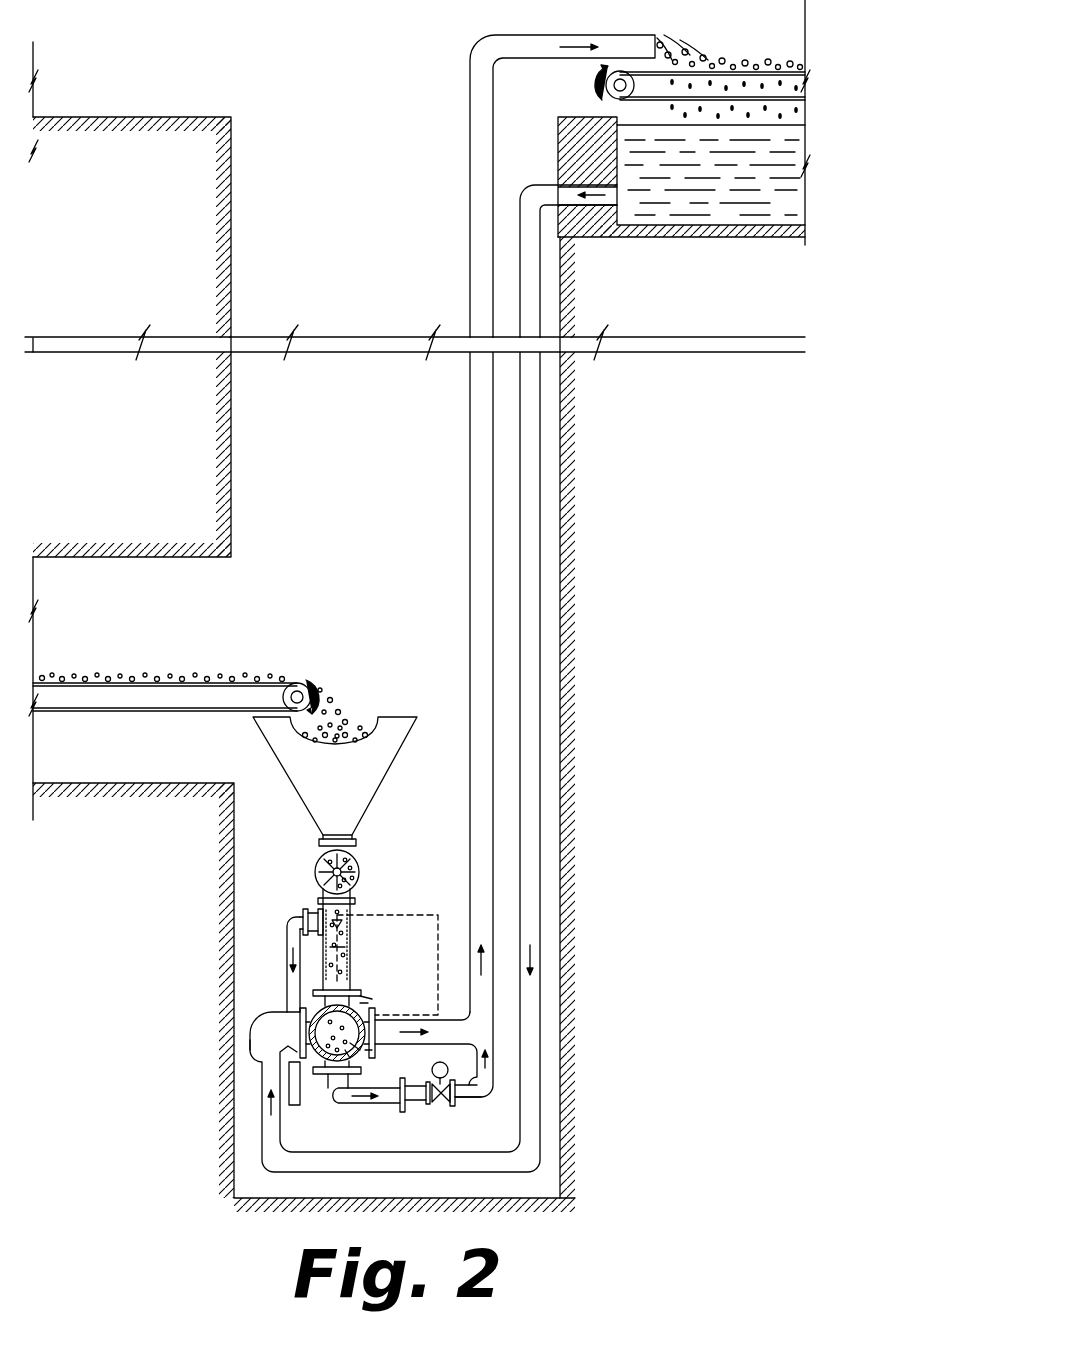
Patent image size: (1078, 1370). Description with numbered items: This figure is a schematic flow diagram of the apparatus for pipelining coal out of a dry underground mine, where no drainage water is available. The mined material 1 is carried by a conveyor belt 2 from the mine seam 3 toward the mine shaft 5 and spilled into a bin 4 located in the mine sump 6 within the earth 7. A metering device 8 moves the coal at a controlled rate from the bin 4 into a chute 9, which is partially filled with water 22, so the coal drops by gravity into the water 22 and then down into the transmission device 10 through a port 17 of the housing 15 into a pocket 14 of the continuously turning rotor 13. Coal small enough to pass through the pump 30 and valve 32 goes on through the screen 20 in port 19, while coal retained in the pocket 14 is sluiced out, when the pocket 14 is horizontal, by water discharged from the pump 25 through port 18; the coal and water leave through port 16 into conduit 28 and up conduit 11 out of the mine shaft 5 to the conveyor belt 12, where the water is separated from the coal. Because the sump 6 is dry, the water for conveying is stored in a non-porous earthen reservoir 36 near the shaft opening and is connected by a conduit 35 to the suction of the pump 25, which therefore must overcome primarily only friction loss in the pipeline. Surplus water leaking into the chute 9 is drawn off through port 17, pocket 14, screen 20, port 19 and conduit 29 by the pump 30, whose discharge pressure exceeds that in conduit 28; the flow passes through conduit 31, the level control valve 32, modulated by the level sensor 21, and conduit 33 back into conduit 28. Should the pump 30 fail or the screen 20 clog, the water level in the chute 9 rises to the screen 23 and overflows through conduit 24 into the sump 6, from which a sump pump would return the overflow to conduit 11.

The mined material 1 is at (240, 682).
The conveyor belt 2 is at (285, 688).
The mine seam 3 is at (114, 616).
The bin 4 is at (395, 766).
The mine shaft 5 is at (312, 436).
The mine sump 6 is at (280, 838).
The earth 7 is at (118, 432).
The metering device 8 is at (358, 866).
The chute 9 is at (352, 962).
The transmission device 10 is at (367, 1025).
The conduit 11 is at (470, 535).
The conveyor belt 12 is at (606, 90).
The rotor 13 is at (358, 1047).
The pocket 14 is at (347, 1057).
The housing 15 is at (368, 1003).
The port 16 is at (372, 1052).
The port 17 is at (372, 999).
The transmission device port 18 is at (300, 1005).
The transmission device port 19 is at (300, 1066).
The screen 20 is at (340, 1076).
The level sensor 21 is at (345, 931).
The water 22 is at (345, 947).
The screen 23 is at (303, 926).
The conduit 24 is at (302, 916).
The pump 25 is at (255, 1030).
The conduit 28 is at (455, 1018).
The conduit 29 is at (353, 1106).
The pump 30 is at (397, 1110).
The conduit 31 is at (421, 1104).
The level control valve 32 is at (447, 1108).
The conduit 33 is at (478, 1100).
The conduit 35 is at (518, 481).
The reservoir 36 is at (712, 205).